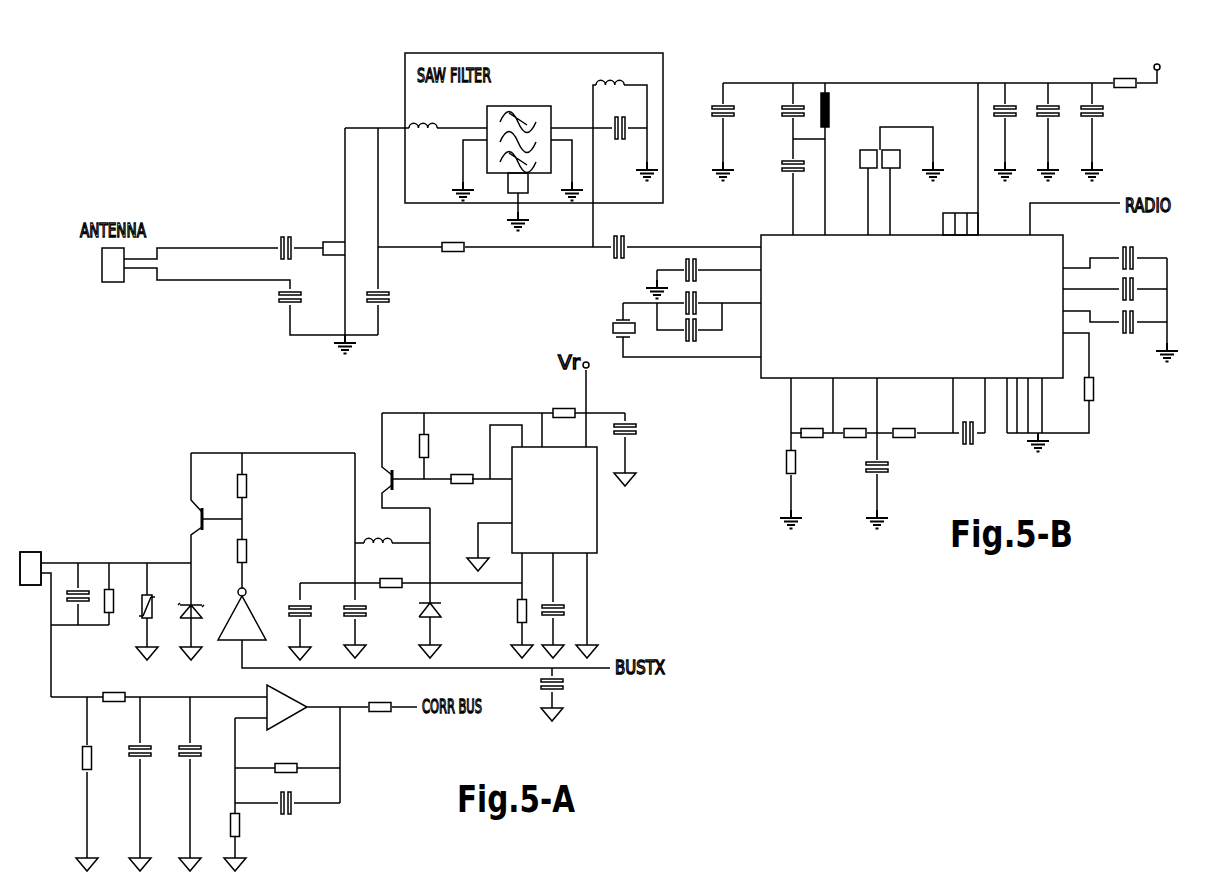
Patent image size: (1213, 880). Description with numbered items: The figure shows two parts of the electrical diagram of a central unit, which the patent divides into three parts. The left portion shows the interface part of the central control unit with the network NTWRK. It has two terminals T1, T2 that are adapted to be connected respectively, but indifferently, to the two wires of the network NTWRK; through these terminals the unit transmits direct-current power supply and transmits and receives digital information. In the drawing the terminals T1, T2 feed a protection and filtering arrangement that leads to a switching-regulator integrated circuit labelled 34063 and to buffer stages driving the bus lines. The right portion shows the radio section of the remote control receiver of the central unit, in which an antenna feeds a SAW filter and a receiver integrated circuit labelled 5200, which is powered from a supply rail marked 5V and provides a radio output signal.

In FIG. 5-A, the terminal T1 is at (101, 554).
In FIG. 5-A, the terminal T2 is at (31, 624).
In FIG. 5-B, the TDA5200 receiver IC 5200 is at (912, 306).
In FIG. 5-A, the MC34063 switching regulator IC 34063 is at (554, 500).
In FIG. 5-B, the +5V supply 5V is at (959, 72).